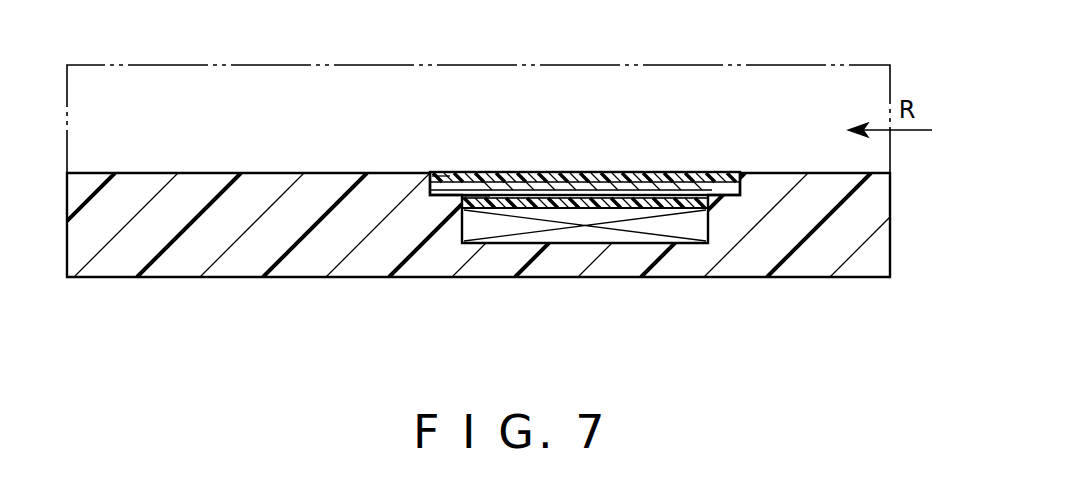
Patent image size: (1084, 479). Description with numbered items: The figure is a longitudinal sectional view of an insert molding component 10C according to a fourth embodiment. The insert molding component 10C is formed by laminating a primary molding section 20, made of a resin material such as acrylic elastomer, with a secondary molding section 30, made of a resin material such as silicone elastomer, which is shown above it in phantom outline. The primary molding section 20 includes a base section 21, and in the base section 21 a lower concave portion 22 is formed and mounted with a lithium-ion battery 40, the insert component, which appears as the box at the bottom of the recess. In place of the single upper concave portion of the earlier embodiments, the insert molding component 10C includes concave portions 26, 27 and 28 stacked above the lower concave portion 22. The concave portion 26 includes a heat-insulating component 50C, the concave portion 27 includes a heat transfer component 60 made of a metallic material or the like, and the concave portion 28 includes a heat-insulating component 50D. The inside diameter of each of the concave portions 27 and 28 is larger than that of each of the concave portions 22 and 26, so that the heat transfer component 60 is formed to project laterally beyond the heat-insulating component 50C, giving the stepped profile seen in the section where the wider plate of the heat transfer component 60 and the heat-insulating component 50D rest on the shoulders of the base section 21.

The insert molding component 10C is at (504, 232).
The primary molding section 20 is at (504, 259).
The base section 21 is at (727, 265).
The lower concave portion 22 is at (470, 224).
The concave portion 26 is at (463, 203).
The concave portion 27 is at (437, 189).
The concave portion 28 is at (452, 178).
The secondary molding section 30 is at (772, 65).
The lithium-ion battery 40 is at (610, 243).
The heat-insulating component 50C is at (647, 200).
The heat-insulating component 50D is at (565, 176).
The heat transfer component 60 is at (722, 188).